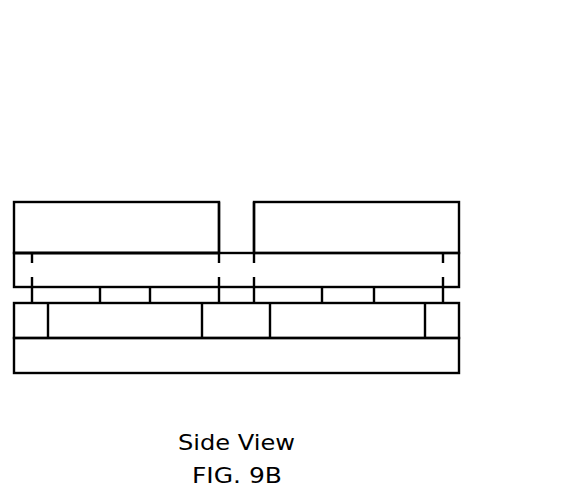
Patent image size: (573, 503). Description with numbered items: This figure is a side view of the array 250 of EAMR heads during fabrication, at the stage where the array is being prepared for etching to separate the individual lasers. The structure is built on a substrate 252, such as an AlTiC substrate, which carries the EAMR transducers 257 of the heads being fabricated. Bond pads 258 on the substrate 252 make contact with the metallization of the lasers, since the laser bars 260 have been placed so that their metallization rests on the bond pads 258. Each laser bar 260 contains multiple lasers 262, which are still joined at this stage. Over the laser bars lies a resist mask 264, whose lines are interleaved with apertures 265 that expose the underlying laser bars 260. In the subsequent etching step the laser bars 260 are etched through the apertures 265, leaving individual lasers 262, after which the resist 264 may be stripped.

The array of EAMR heads 250 is at (262, 93).
The substrate 252 is at (355, 373).
The EAMR transducer 257 is at (135, 340).
The bond pad 258 is at (150, 296).
The laser bar 260 is at (343, 253).
The laser 262 is at (144, 253).
The resist mask 264 is at (100, 202).
The aperture 265 is at (233, 184).